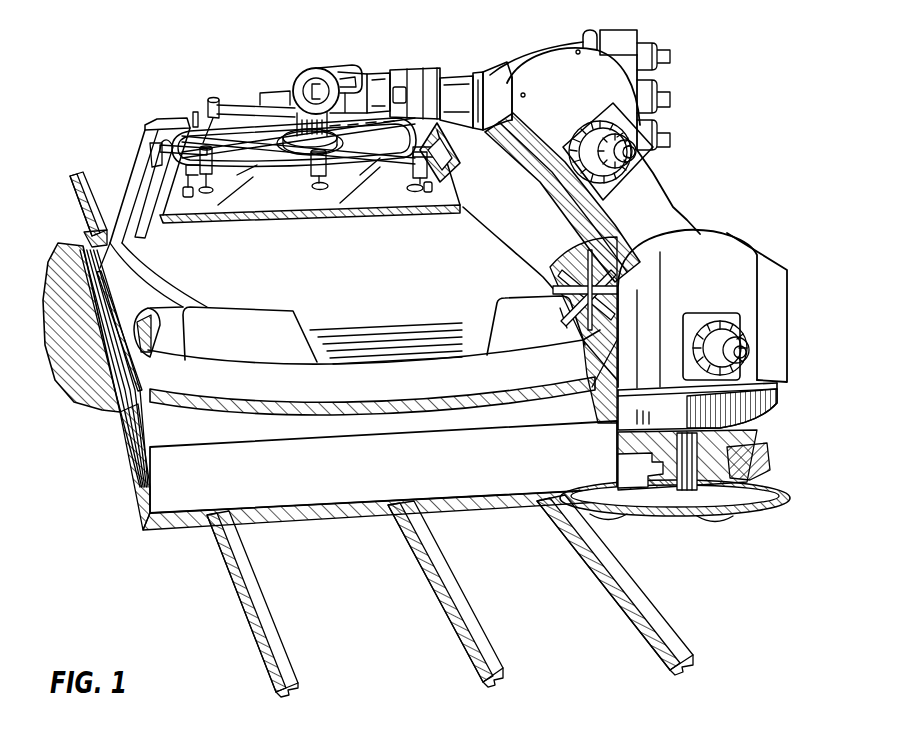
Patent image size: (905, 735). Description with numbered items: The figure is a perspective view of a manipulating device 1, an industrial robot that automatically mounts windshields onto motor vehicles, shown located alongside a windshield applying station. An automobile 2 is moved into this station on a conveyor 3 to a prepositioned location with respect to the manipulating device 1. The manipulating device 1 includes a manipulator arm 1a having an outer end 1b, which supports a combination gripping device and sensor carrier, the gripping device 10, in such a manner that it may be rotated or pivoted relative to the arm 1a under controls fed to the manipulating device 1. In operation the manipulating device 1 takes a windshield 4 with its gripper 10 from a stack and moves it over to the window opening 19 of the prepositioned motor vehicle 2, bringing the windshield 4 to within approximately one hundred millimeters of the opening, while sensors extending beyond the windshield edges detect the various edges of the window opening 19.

The manipulating device 1 is at (722, 257).
The manipulator arm 1a is at (424, 64).
The outer end 1b is at (311, 66).
The automobile 2 is at (432, 315).
The conveyor 3 is at (190, 494).
The windshield 4 is at (393, 197).
The gripping device 10 is at (247, 100).
The window opening 19 is at (252, 228).